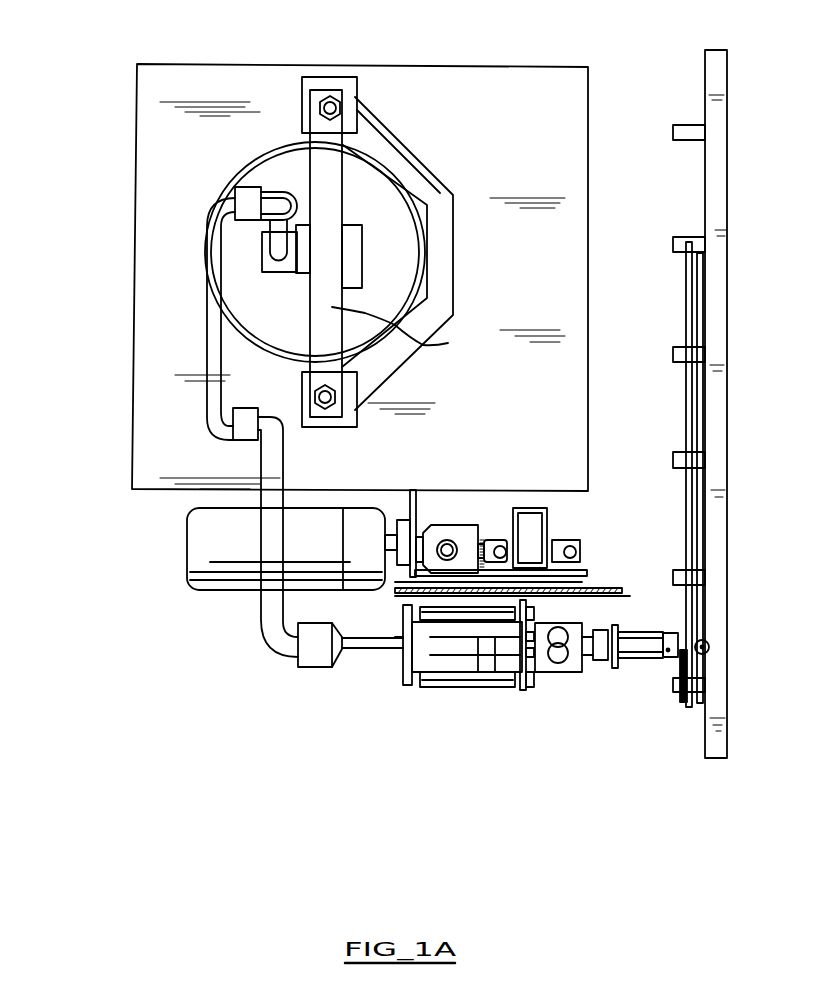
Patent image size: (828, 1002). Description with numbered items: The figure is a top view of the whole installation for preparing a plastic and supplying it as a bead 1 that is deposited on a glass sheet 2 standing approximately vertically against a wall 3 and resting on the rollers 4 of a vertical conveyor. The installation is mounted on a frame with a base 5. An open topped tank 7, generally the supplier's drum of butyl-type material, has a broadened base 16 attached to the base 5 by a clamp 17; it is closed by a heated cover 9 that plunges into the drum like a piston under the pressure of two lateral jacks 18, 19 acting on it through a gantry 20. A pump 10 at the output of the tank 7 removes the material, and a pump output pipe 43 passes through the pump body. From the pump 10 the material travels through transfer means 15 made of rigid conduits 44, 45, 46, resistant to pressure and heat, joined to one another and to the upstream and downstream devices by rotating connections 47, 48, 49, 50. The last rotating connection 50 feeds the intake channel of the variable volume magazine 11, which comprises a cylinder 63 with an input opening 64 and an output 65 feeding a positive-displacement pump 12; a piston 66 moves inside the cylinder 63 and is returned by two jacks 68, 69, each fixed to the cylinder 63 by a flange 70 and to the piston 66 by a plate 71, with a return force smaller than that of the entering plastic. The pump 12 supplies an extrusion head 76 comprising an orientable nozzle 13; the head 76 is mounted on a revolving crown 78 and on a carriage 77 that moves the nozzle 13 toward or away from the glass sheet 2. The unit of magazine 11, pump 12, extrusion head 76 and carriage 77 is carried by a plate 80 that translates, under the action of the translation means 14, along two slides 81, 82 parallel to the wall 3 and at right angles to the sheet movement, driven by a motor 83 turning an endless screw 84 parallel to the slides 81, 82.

The bead 1 is at (683, 706).
The glass sheet 2 is at (692, 617).
The wall 3 is at (712, 536).
The rollers 4 is at (684, 450).
The base 5 is at (555, 93).
The tank 7 is at (398, 197).
The heated cover 9 is at (372, 192).
The pump 10 is at (353, 248).
The variable volume magazine 11 is at (446, 709).
The positive-displacement pump 12 is at (558, 673).
The nozzle 13 is at (675, 642).
The translation means 14 is at (387, 497).
The transfer means 15 is at (217, 416).
The broadened base 16 is at (276, 163).
The clamp 17 is at (375, 128).
The lateral jack 18 is at (363, 73).
The lateral jack 19 is at (322, 421).
The gantry 20 is at (407, 330).
The pump output pipe 43 is at (263, 272).
The rigid conduit 44 is at (265, 197).
The rigid conduit 45 is at (207, 363).
The rigid conduit 46 is at (262, 478).
The rotating connection 47 is at (280, 245).
The rotating connection 48 is at (250, 200).
The rotating connection 49 is at (237, 423).
The rotating connection 50 is at (317, 648).
The cylinder 63 is at (485, 672).
The input opening 64 is at (440, 660).
The output 65 is at (530, 672).
The piston 66 is at (495, 672).
The jack 68 is at (440, 606).
The jack 69 is at (438, 672).
The flange 70 is at (527, 641).
The plate 71 is at (425, 684).
The extrusion head 76 is at (653, 670).
The carriage 77 is at (625, 598).
The crown 78 is at (616, 668).
The plate 80 is at (478, 545).
The slide 81 is at (500, 548).
The slide 82 is at (554, 508).
The motor 83 is at (328, 528).
The endless screw 84 is at (446, 548).